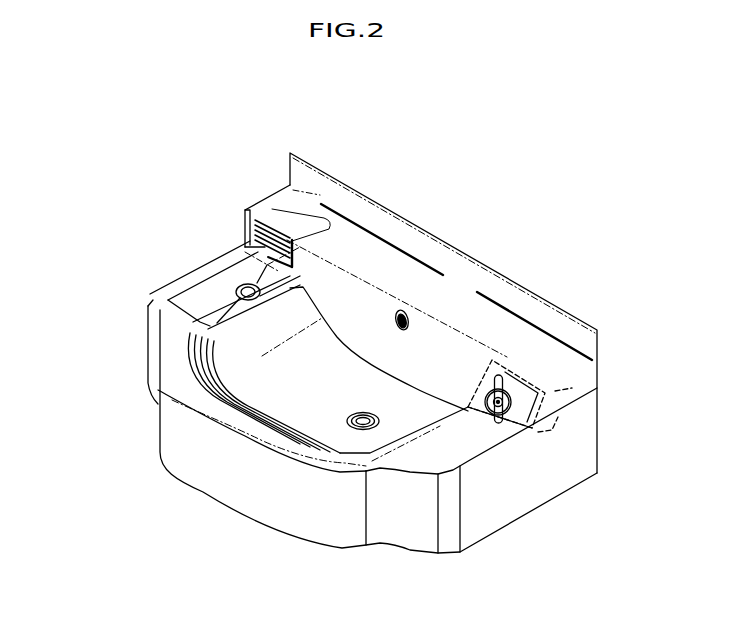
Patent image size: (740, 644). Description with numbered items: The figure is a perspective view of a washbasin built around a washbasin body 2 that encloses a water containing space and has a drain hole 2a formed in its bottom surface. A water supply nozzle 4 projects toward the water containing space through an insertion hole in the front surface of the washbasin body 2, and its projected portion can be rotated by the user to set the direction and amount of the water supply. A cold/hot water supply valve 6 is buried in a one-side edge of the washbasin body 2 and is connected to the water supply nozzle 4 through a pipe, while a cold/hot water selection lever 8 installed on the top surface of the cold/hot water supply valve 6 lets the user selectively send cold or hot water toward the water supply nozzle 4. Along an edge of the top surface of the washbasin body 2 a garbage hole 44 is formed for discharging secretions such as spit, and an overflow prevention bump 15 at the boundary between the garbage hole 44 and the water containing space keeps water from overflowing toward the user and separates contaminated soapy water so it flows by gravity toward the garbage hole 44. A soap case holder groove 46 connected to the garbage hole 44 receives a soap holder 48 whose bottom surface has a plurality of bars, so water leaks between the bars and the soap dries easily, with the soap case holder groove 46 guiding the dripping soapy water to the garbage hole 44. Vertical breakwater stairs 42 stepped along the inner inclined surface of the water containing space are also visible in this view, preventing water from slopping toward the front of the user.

The washbasin body 2 is at (195, 473).
The drain hole 2a is at (357, 428).
The water supply nozzle 4 is at (409, 308).
The cold/hot water supply valve 6 is at (550, 408).
The cold/hot water selection lever 8 is at (507, 381).
The overflow prevention bump 15 is at (288, 292).
The ribs 42 is at (203, 379).
The garbage hole 44 is at (236, 293).
The soap case holder groove 46 is at (249, 243).
The soap holder 48 is at (268, 242).